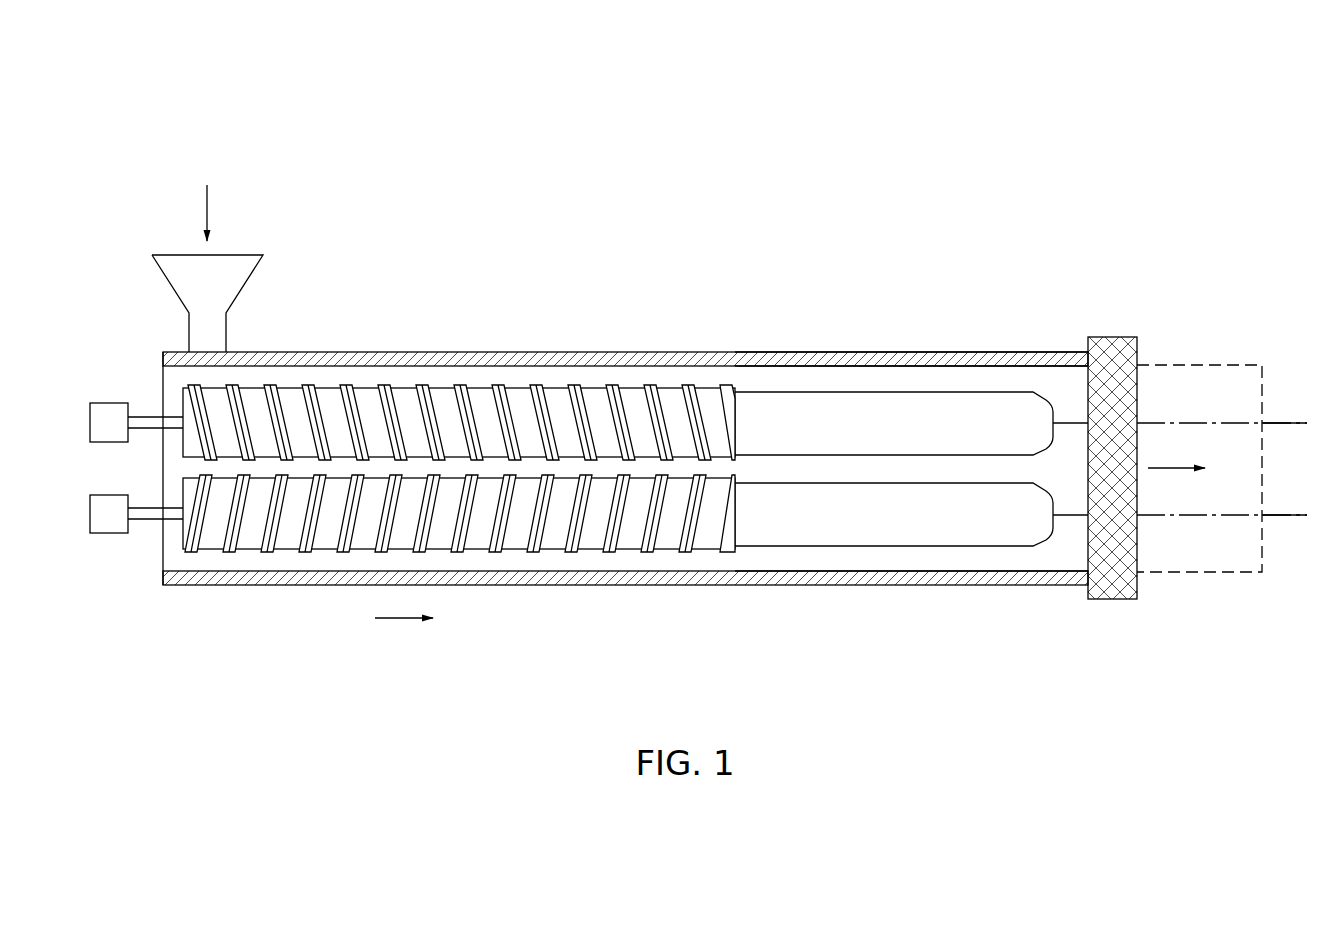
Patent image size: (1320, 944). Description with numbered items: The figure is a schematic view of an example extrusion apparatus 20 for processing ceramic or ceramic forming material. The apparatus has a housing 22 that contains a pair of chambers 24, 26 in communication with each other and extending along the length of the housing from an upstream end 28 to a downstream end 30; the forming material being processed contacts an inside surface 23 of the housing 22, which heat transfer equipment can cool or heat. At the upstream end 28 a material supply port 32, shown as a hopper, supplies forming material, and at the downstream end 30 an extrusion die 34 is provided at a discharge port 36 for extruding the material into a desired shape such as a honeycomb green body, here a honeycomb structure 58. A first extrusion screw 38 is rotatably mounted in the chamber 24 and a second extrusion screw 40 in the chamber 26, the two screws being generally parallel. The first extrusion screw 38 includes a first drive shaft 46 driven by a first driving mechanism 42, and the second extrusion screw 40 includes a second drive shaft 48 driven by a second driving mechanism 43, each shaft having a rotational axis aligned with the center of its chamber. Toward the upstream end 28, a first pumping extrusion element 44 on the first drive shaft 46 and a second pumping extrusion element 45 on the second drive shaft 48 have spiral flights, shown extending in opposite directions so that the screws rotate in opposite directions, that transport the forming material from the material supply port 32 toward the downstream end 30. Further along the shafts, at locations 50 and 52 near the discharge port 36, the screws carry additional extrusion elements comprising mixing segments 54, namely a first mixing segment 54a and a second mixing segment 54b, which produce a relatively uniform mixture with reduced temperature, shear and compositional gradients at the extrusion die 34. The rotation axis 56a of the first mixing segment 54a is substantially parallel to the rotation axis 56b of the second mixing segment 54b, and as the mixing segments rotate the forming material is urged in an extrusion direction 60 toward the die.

The extrusion apparatus 20 is at (426, 191).
The housing 22 is at (341, 352).
The inside surface 23 is at (496, 368).
The chamber 24 is at (459, 327).
The chamber 26 is at (459, 600).
The upstream end 28 is at (248, 594).
The downstream end 30 is at (1137, 513).
The material supply port 32 is at (172, 268).
The extrusion die 34 is at (1137, 410).
The discharge port 36 is at (1070, 354).
The first extrusion screw 38 is at (459, 374).
The second extrusion screw 40 is at (459, 561).
The first driving mechanism 42 is at (90, 418).
The second driving mechanism 43 is at (90, 512).
The first pumping extrusion element 44 is at (553, 387).
The second pumping extrusion element 45 is at (620, 549).
The first drive shaft 46 is at (148, 414).
The second drive shaft 48 is at (148, 506).
The location 50 is at (911, 373).
The location 52 is at (911, 567).
The mixing segment 54 is at (911, 305).
The first mixing segment 54a is at (911, 325).
The second mixing segment 54b is at (911, 612).
The rotation axis 56a is at (1278, 423).
The rotation axis 56b is at (1278, 515).
The honeycomb structure 58 is at (1222, 358).
The extrusion direction 60 is at (1172, 468).